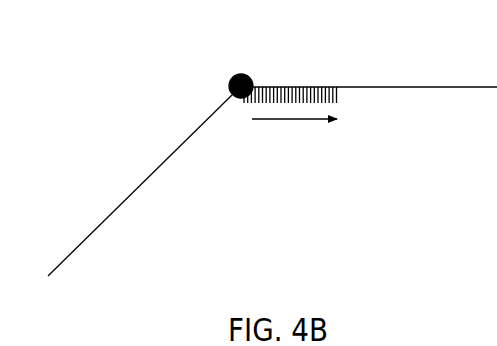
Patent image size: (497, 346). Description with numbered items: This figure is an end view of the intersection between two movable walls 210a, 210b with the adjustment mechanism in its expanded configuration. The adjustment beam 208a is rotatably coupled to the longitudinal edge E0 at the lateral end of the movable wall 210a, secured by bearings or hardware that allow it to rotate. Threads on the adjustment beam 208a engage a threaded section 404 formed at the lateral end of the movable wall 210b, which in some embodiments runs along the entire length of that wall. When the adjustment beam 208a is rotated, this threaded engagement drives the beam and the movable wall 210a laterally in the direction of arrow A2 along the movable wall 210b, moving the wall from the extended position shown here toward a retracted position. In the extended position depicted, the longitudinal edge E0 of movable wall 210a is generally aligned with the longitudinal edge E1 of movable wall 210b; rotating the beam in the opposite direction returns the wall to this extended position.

The movable wall 210a is at (98, 226).
The movable wall 210b is at (470, 87).
The adjustment beam 208a is at (237, 73).
The threaded section 404 is at (344, 95).
The longitudinal edge E0 is at (222, 87).
The longitudinal edge E1 is at (253, 77).
The arrow A2 is at (268, 119).